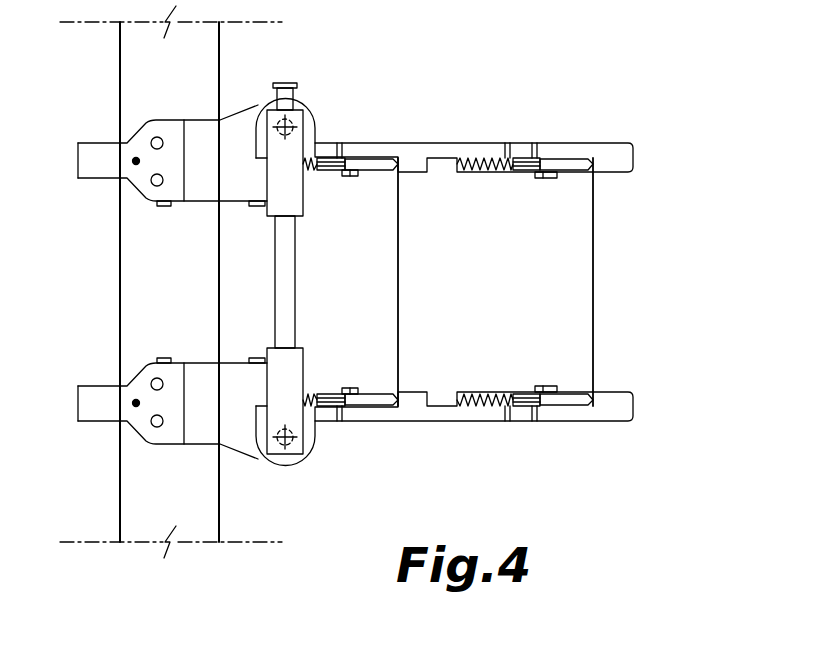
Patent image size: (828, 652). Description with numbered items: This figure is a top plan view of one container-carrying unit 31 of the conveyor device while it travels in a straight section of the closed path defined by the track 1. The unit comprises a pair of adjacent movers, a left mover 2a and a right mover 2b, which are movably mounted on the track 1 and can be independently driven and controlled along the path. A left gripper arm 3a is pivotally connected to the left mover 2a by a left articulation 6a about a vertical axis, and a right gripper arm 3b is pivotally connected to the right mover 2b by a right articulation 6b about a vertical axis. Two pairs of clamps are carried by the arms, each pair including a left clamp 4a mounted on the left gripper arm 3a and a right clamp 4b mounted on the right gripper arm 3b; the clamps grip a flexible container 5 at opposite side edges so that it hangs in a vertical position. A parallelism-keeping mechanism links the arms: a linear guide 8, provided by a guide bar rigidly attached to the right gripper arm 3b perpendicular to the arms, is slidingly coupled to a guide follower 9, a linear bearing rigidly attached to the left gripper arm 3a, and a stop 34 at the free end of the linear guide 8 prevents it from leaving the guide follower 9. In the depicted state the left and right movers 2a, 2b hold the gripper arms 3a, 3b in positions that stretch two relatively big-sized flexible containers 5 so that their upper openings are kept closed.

The track 1 is at (118, 283).
The left mover 2a is at (228, 145).
The right mover 2b is at (228, 419).
The left gripper arm 3a is at (443, 147).
The right gripper arm 3b is at (443, 414).
The left clamp 4a is at (376, 168).
The right clamp 4b is at (377, 398).
The flexible container 5 is at (398, 283).
The left articulation 6a is at (297, 124).
The right articulation 6b is at (305, 452).
The linear guide 8 is at (287, 287).
The guide follower 9 is at (298, 198).
The container-carrying unit 31 is at (506, 100).
The stop 34 is at (286, 84).